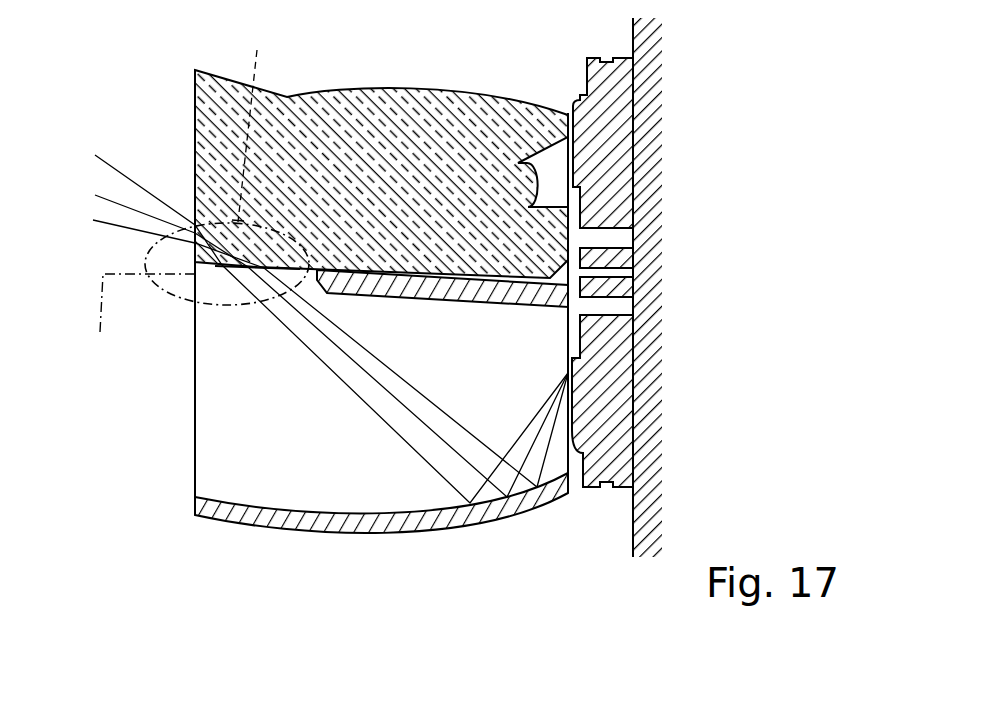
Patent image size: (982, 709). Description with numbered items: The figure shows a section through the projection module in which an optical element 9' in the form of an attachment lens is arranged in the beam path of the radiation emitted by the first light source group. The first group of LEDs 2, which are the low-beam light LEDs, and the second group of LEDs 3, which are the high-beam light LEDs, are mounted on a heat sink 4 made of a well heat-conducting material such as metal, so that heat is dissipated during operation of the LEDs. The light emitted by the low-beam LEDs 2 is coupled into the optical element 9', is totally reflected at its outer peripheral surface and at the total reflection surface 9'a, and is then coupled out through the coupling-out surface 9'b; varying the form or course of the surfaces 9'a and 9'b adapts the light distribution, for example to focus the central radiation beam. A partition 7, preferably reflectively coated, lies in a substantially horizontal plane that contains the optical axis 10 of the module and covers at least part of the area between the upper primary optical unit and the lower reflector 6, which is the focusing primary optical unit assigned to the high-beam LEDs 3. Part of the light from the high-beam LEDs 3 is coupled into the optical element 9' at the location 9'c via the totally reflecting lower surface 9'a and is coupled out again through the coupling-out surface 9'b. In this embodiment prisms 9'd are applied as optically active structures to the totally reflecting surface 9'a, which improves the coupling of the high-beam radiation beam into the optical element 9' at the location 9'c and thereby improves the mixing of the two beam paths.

The first group of LEDs 2 is at (576, 173).
The second group of LEDs 3 is at (578, 374).
The heat sink 4 is at (650, 291).
The reflector 6 is at (362, 533).
The partition 7 is at (458, 302).
The optical element 9' is at (381, 145).
The total reflection surface 9'a is at (282, 140).
The coupling-out surface 9'b is at (157, 152).
The coupling location 9'c is at (227, 307).
The prisms 9'd is at (253, 117).
The optical axis 10 is at (140, 320).